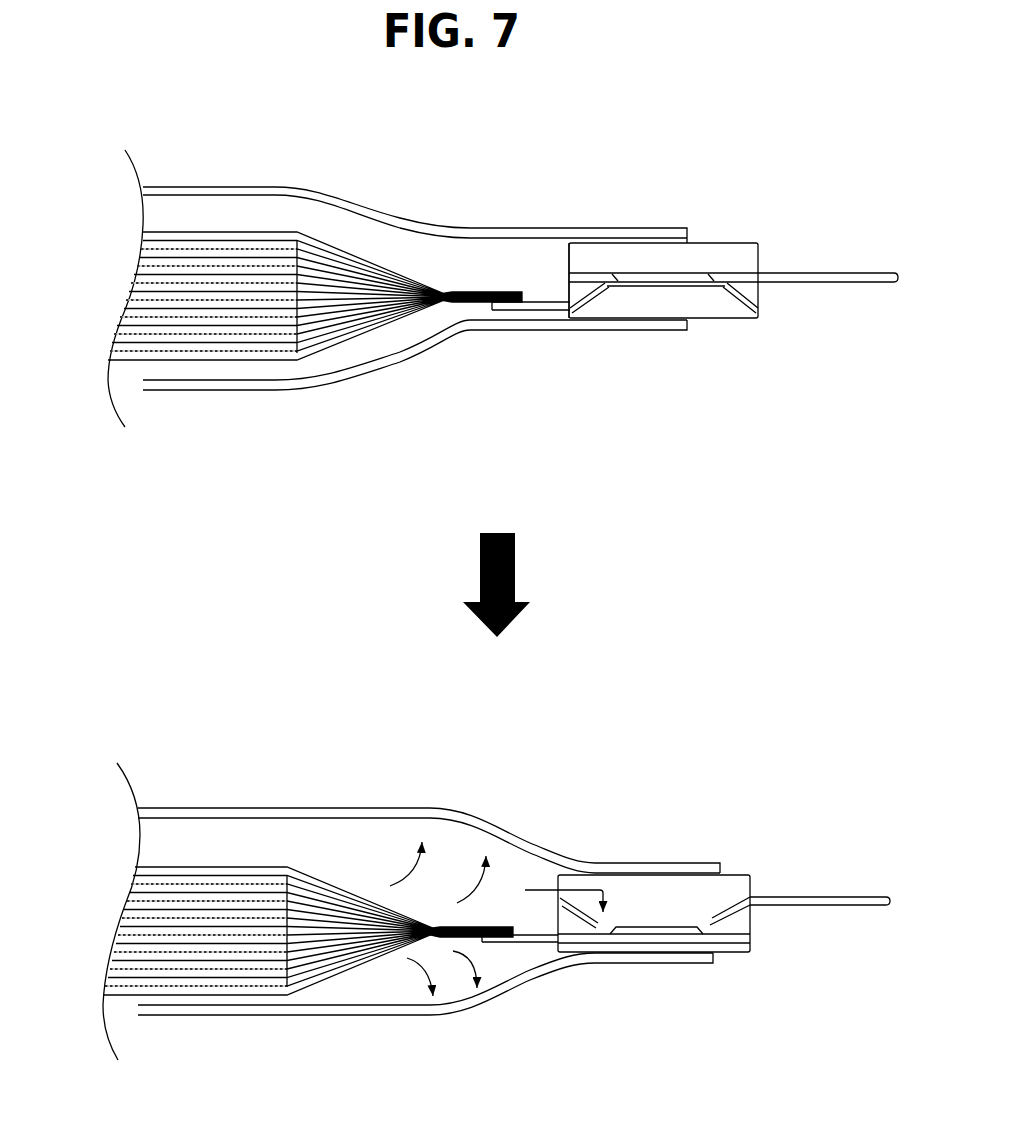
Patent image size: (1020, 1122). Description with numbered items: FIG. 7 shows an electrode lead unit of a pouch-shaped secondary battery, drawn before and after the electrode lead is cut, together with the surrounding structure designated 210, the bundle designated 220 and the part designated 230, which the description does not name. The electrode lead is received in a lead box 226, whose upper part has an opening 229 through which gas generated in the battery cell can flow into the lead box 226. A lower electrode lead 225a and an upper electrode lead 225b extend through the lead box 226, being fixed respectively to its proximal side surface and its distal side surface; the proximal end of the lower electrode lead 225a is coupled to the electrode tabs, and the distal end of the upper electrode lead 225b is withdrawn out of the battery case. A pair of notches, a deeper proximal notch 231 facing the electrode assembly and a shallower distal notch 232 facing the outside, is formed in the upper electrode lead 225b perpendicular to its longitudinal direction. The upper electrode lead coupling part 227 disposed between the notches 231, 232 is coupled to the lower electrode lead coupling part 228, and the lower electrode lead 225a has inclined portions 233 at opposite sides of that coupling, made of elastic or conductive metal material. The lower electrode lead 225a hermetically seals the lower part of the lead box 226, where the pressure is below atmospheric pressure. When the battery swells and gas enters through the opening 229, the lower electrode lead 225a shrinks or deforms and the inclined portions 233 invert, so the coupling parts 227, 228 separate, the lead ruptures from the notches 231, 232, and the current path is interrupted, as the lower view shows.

The outer tube 210 is at (400, 217).
The optical fiber bundle 220 is at (90, 230).
The lower electrode lead 225a is at (518, 312).
The upper electrode lead 225b is at (799, 284).
The lead box 226 is at (726, 322).
The upper electrode lead coupling part 227 is at (680, 271).
The lower electrode lead coupling part 228 is at (663, 289).
The opening 229 is at (564, 256).
The inner tube 230 is at (407, 352).
The proximal notch 231 is at (617, 266).
The distal notch 232 is at (712, 266).
The inclined portion 233 is at (583, 305).